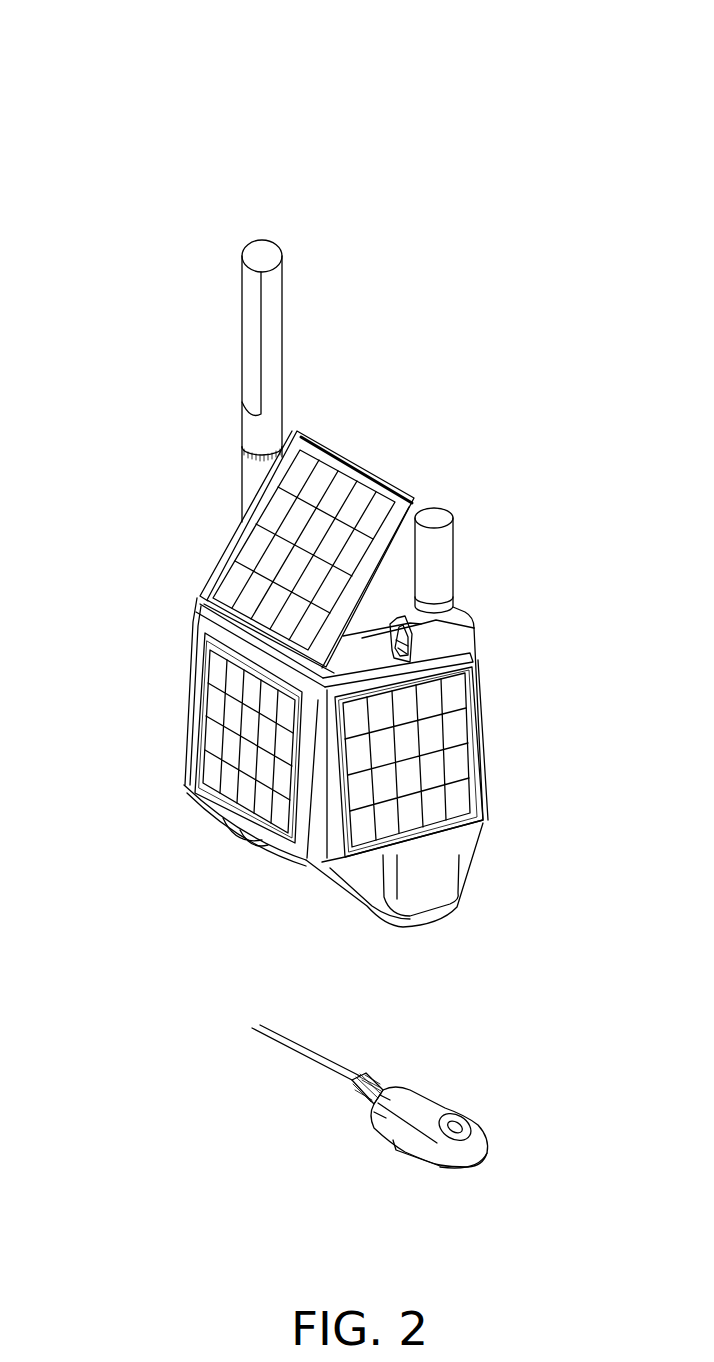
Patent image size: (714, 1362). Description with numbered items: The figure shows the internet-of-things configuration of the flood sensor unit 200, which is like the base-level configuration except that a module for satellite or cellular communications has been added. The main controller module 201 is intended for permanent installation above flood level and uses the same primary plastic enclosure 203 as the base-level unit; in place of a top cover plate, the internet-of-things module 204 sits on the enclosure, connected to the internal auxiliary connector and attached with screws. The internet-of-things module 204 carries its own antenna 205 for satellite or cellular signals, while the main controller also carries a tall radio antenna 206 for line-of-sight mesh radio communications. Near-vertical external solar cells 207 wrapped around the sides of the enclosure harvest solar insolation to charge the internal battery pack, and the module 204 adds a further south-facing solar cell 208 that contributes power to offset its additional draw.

The flood sensor unit 200 is at (477, 165).
The main controller module 201 is at (490, 740).
The primary plastic enclosure 203 is at (475, 620).
The internet-of-things module 204 is at (295, 534).
The antenna 205 is at (460, 525).
The radio antenna 206 is at (285, 348).
The external solar cells 207 is at (222, 745).
The solar cells 208 is at (262, 553).